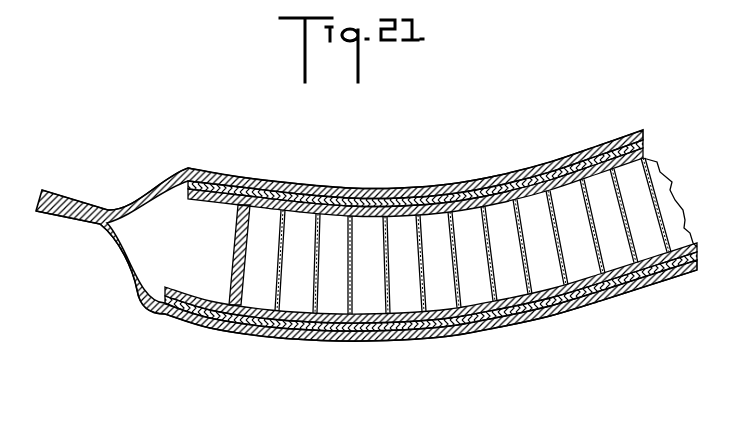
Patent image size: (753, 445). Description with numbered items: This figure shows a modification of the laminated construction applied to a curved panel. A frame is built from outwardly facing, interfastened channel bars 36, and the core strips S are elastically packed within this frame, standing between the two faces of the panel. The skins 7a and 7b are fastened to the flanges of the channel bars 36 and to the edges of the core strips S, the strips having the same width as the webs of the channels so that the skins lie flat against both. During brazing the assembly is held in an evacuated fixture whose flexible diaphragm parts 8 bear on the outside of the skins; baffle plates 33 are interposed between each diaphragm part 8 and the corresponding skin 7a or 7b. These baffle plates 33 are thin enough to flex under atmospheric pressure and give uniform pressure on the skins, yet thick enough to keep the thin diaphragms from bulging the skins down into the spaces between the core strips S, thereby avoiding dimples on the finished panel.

The skin 7a is at (497, 322).
The skin 7b is at (481, 185).
The flexible diaphragm part 8 is at (584, 153).
The baffle plate 33 is at (442, 192).
The channel bar 36 is at (236, 245).
The core strip S is at (415, 238).